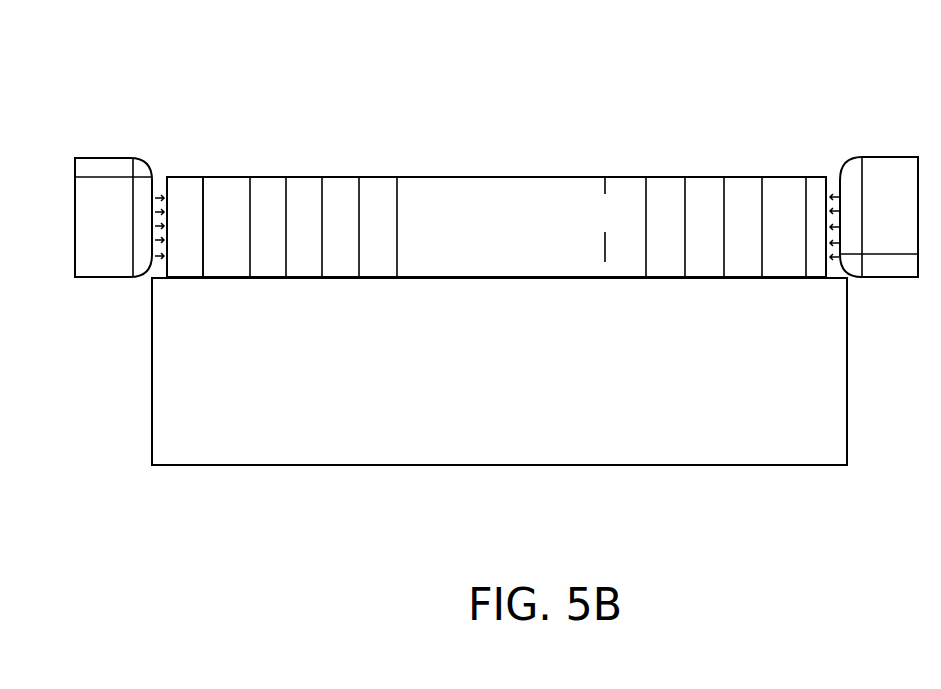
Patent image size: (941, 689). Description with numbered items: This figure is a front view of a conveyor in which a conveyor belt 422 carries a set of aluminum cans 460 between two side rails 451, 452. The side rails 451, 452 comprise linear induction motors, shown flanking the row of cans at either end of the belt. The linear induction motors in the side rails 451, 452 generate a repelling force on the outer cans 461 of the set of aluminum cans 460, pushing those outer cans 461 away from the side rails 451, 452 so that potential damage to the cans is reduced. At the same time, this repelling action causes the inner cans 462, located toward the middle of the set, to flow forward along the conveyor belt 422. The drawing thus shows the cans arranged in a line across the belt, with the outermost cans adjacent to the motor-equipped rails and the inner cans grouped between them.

The side rail 451 is at (102, 210).
The side rail 452 is at (882, 176).
The set of aluminum cans 460 is at (167, 174).
The outer cans 461 is at (178, 283).
The inner cans 462 is at (567, 285).
The conveyor belt 422 is at (838, 368).